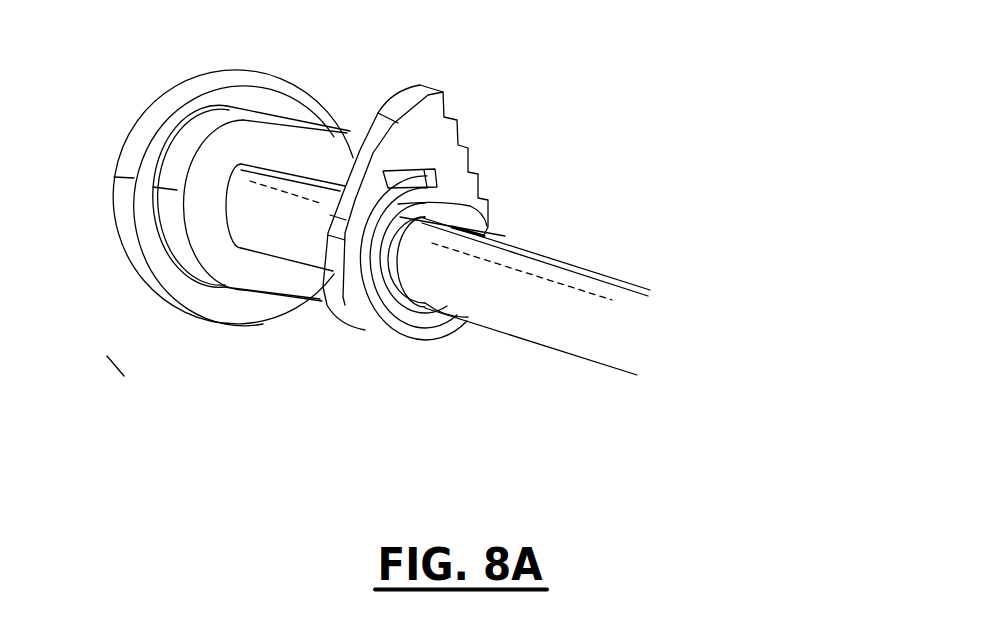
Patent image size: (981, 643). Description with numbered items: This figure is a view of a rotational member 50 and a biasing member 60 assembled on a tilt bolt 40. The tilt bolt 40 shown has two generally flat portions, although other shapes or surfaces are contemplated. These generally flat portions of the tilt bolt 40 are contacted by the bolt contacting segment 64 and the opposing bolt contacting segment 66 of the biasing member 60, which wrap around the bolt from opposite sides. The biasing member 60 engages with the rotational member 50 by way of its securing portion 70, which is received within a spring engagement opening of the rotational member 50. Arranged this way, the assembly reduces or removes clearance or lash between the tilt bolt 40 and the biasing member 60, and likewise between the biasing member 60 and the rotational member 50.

The tilt bolt 40 is at (592, 254).
The rotational member 50 is at (423, 113).
The biasing member 60 is at (387, 338).
The bolt contacting segment 64 is at (422, 310).
The opposing bolt contacting segment 66 is at (447, 214).
The securing portion 70 is at (440, 220).